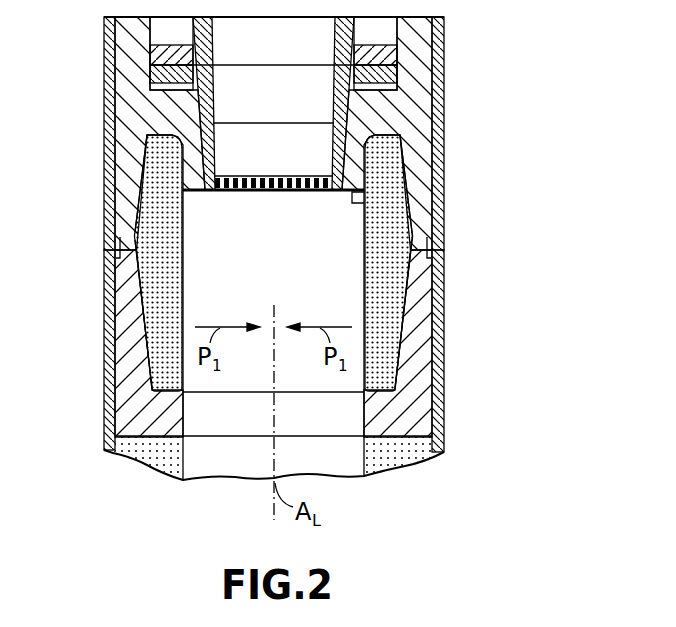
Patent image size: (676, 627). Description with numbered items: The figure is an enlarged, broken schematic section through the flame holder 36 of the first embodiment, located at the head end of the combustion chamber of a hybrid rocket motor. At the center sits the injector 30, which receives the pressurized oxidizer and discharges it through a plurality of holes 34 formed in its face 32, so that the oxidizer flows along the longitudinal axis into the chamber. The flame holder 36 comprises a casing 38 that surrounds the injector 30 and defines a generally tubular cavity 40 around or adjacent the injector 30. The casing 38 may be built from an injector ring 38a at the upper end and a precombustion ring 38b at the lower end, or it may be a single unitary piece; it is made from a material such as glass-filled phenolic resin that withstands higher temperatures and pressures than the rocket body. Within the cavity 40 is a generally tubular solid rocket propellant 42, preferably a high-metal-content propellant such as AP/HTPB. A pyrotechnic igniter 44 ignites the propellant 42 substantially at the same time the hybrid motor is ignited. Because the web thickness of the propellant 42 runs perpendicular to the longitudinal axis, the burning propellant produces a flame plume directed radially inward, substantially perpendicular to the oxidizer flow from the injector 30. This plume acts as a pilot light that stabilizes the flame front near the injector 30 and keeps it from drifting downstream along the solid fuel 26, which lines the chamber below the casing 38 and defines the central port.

The solid fuel 26 is at (140, 460).
The injector 30 is at (350, 110).
The face 32 is at (300, 193).
The holes 34 is at (283, 193).
The flame holder 36 is at (100, 137).
The casing 38 is at (415, 128).
The injector ring 38a is at (115, 75).
The precombustion ring 38b is at (115, 425).
The cavity 40 is at (410, 290).
The solid rocket propellant 42 is at (405, 318).
The pyrotechnic igniter 44 is at (345, 186).